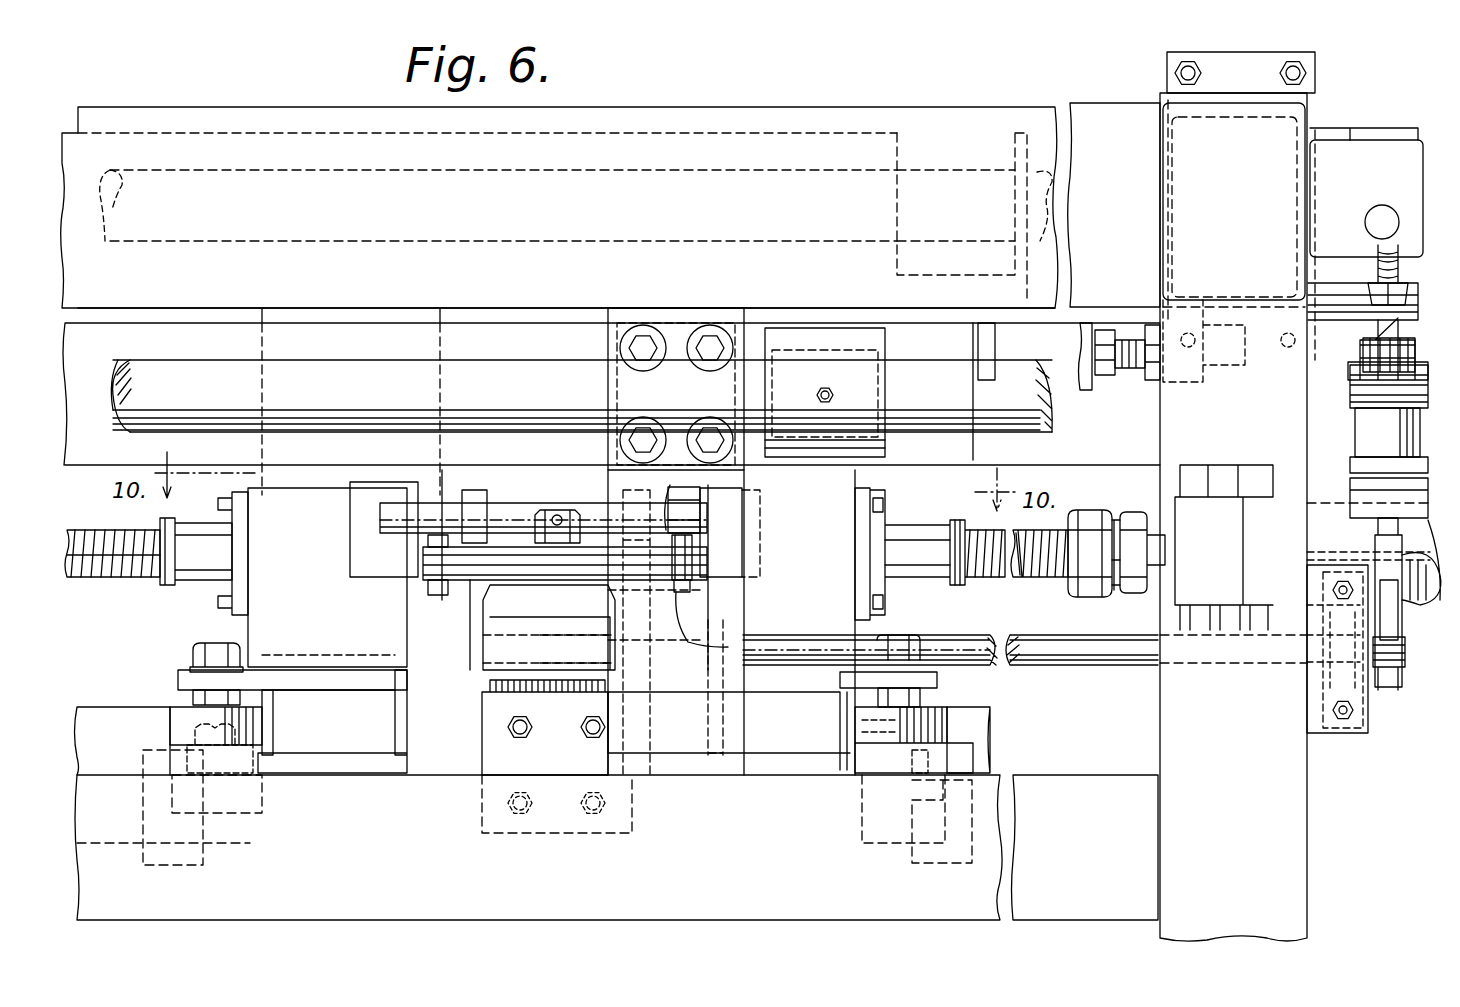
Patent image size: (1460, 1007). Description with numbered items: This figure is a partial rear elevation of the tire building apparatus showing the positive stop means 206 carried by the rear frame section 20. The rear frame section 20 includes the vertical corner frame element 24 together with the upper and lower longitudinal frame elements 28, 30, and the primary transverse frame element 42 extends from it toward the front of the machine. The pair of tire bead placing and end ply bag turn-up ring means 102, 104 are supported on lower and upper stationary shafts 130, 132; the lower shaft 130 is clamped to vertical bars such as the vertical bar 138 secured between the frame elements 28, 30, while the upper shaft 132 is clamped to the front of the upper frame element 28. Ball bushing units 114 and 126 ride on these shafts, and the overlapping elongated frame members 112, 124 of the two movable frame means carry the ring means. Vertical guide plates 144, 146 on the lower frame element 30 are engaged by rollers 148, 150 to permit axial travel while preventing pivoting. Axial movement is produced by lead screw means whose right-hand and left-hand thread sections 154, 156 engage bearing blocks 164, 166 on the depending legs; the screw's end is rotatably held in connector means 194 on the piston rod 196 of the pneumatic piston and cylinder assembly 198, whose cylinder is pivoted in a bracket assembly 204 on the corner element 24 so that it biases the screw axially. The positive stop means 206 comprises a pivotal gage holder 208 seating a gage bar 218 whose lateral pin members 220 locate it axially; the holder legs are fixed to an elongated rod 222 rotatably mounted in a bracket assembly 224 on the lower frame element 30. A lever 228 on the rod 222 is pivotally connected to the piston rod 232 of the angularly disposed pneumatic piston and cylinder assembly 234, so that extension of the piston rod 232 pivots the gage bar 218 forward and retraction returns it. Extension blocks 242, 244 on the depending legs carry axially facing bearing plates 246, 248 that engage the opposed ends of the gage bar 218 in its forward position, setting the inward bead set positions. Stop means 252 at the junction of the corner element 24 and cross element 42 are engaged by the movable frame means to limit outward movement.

The rear frame section 20 is at (1097, 92).
The vertical corner frame element 24 is at (1287, 795).
The upper longitudinal frame element 28 is at (1118, 116).
The lower longitudinal frame element 30 is at (1095, 782).
The primary transverse frame element 42 is at (1175, 167).
The tire bead placing and end ply bag turn-up ring means 102 is at (890, 482).
The tire bead placing and end ply bag turn-up ring means 104 is at (208, 628).
The elongated frame member 112 is at (568, 320).
The ball bushing units 114 is at (870, 338).
The elongated frame member 124 is at (658, 148).
The ball bushing units 126 is at (897, 266).
The lower stationary shaft 130 is at (1015, 430).
The upper stationary shaft 132 is at (799, 182).
The vertical bar 138 is at (680, 752).
The vertical guide plate 144 is at (975, 712).
The vertical guide plate 146 is at (97, 716).
The rollers 148 is at (865, 790).
The rollers 150 is at (265, 718).
The right-hand thread section 154 is at (108, 572).
The left-hand thread section 156 is at (1046, 577).
The bearing block 164 is at (212, 593).
The bearing block 166 is at (912, 519).
The connector means 194 is at (1104, 510).
The piston rod 196 is at (1150, 590).
The pneumatic piston and cylinder assembly 198 is at (1326, 494).
The bracket assembly 204 is at (1222, 470).
The positive stop means 206 is at (532, 485).
The pivotal gage holder 208 is at (547, 579).
The gage member or bar 218 is at (523, 508).
The lateral pin members 220 is at (555, 526).
The elongated rod 222 is at (1068, 655).
The bracket assembly 224 is at (472, 733).
The lever 228 is at (1390, 685).
The piston rod 232 is at (1378, 532).
The angularly disposed pneumatic piston and cylinder assembly 234 is at (1345, 426).
The extension block 242 is at (735, 557).
The extension block 244 is at (390, 565).
The bearing plate 246 is at (672, 490).
The bearing plate 248 is at (440, 490).
The stop means 252 is at (1128, 379).